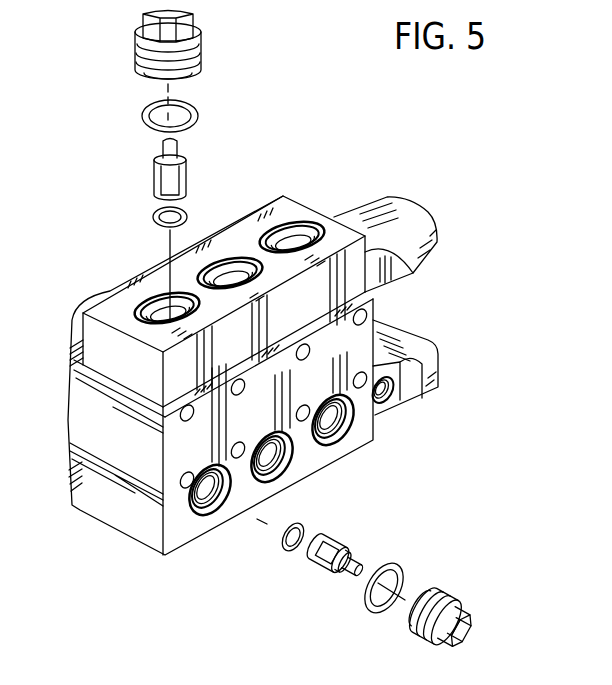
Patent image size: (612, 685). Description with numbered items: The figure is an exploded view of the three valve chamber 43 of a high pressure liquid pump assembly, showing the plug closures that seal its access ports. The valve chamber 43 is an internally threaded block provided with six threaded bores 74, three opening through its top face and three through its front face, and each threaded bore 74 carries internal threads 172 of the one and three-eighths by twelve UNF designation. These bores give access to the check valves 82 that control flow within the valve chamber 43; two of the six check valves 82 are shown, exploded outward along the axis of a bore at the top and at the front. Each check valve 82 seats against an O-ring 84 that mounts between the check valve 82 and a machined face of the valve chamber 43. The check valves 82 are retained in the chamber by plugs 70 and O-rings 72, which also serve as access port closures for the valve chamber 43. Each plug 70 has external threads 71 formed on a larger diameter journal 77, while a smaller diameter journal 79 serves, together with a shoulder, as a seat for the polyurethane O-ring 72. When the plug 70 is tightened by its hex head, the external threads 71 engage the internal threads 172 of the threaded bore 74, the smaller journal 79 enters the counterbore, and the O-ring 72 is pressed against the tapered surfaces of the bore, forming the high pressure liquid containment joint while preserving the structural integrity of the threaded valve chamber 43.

The three valve chamber 43 is at (83, 453).
The plug 70 is at (143, 30).
The external threads 71 is at (199, 46).
The larger diameter journal 77 is at (138, 60).
The smaller diameter journal 79 is at (175, 78).
The O-ring 72 is at (146, 118).
The check valve 82 is at (152, 180).
The O-ring 84 is at (182, 211).
The internal threads 172 is at (182, 298).
The threaded bore 74 is at (145, 297).